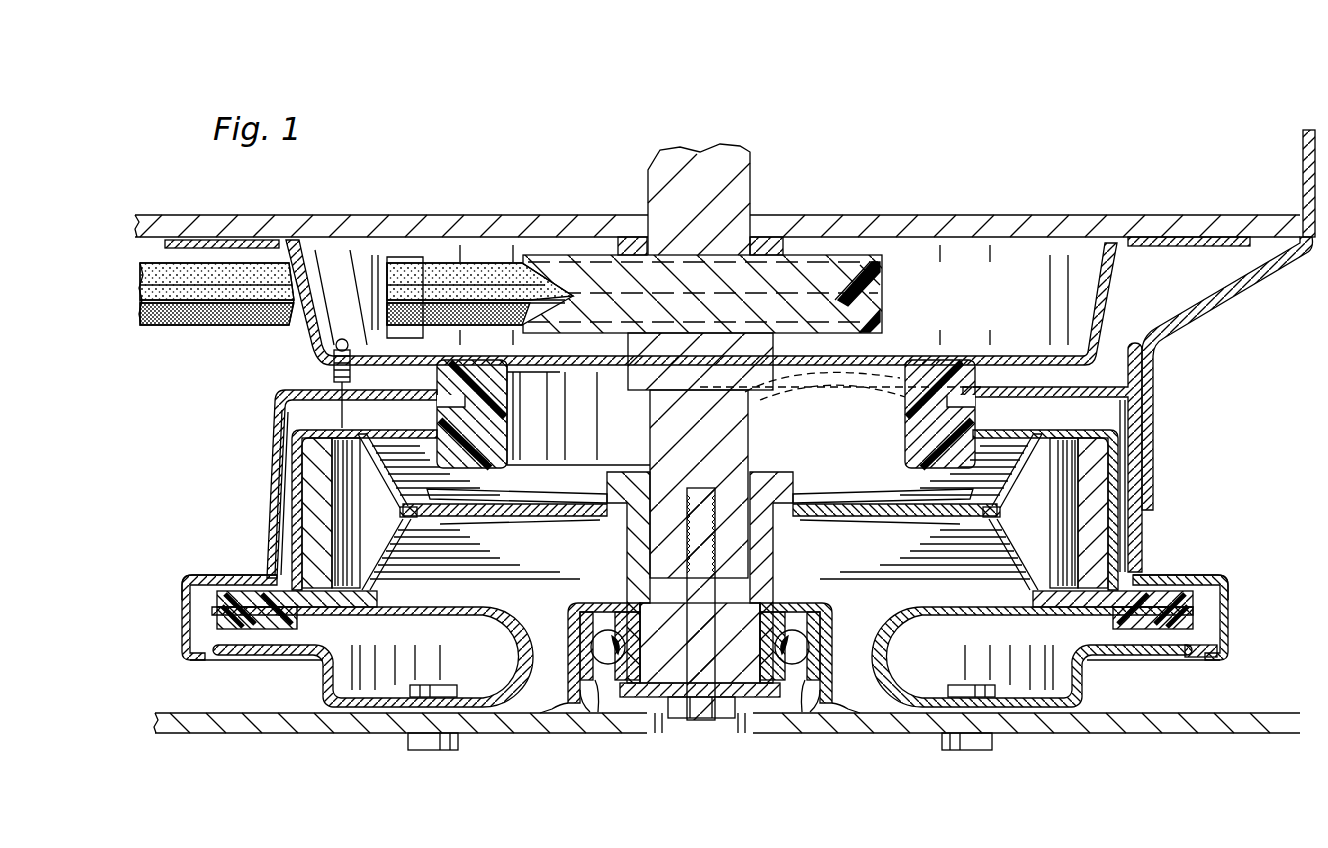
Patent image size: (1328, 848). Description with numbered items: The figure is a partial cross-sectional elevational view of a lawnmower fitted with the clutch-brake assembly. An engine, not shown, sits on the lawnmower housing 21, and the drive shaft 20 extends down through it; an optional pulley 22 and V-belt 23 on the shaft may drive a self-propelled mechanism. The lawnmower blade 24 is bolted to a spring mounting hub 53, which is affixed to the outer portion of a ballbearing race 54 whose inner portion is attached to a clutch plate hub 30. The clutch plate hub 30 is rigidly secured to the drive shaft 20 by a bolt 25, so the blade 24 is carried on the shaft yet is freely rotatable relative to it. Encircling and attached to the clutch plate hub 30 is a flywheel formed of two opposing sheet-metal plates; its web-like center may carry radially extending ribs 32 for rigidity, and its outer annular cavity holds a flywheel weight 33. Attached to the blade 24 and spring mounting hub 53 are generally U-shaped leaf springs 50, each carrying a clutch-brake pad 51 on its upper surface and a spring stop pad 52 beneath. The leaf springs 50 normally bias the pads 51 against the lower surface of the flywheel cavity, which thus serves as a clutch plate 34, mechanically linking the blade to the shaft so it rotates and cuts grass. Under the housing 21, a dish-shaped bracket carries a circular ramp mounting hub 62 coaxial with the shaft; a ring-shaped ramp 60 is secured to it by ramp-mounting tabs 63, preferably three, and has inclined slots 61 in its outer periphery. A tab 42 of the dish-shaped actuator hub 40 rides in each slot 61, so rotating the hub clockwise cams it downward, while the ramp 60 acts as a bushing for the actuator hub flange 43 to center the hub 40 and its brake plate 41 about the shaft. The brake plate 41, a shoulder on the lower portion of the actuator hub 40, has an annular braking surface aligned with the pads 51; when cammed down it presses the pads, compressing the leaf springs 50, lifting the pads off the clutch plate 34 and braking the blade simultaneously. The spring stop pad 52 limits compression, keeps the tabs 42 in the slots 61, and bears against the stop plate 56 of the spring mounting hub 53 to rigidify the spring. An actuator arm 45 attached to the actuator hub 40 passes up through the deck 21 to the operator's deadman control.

The drive shaft 20 is at (682, 192).
The lawnmower housing 21 is at (890, 214).
The pulley 22 is at (868, 337).
The V-belt 23 is at (888, 302).
The lawnmower blade 24 is at (528, 733).
The bolt 25 is at (688, 733).
The clutch plate hub 30 is at (645, 592).
The radially extending ribs 32 is at (560, 503).
The flywheel weight 33 is at (330, 531).
The clutch plate 34 is at (1064, 510).
The actuator hub 40 is at (270, 453).
The brake plate 41 is at (240, 572).
The tab 42 is at (378, 427).
The actuator hub flange 43 is at (978, 414).
The actuator arm 45 is at (1200, 305).
The leaf spring 50 is at (497, 622).
The clutch-brake pad 51 is at (405, 586).
The spring stop pad 52 is at (298, 629).
The spring mounting hub 53 is at (467, 671).
The ballbearing race 54 is at (598, 700).
The stop plate 56 is at (196, 662).
The ring-shaped ramp 60 is at (445, 446).
The inclined slots 61 is at (900, 405).
The ramp mounting hub 62 is at (330, 303).
The ramp-mounting tabs 63 is at (490, 466).